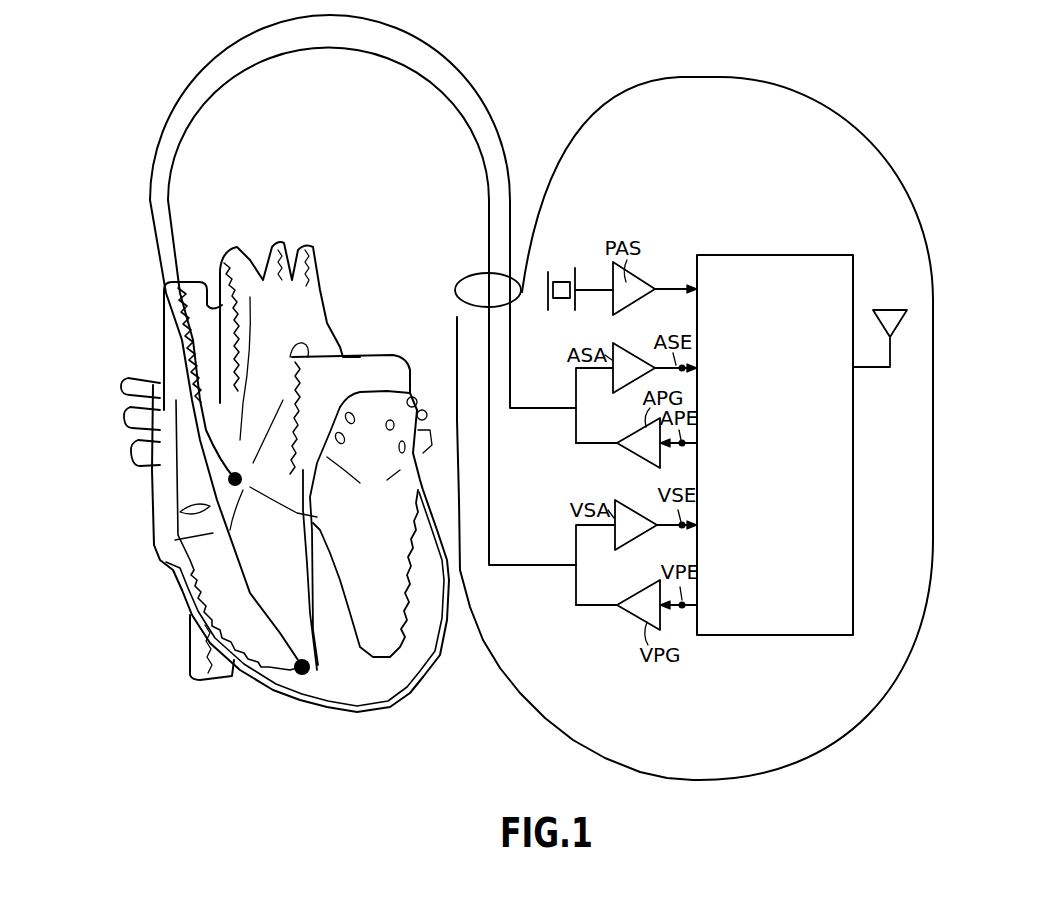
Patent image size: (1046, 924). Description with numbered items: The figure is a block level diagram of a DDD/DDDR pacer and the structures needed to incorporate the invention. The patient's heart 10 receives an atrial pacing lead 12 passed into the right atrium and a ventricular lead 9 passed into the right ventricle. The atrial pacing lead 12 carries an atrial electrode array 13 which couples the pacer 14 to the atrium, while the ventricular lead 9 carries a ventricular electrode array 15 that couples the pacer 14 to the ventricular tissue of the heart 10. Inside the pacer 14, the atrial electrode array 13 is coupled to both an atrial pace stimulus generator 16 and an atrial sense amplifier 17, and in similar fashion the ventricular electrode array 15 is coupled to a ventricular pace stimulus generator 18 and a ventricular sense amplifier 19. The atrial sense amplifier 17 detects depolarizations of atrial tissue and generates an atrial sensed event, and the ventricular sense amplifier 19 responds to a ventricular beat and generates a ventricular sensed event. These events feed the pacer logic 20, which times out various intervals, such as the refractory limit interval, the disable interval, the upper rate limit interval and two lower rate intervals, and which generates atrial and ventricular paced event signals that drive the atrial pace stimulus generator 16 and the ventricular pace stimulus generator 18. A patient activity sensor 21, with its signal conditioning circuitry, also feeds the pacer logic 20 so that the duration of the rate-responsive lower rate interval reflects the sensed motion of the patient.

The ventricular lead 9 is at (171, 242).
The patient's heart 10 is at (175, 614).
The atrial pacing lead 12 is at (153, 244).
The atrial electrode array 13 is at (262, 461).
The pacer 14 is at (602, 104).
The ventricular electrode array 15 is at (313, 677).
The atrial pace stimulus generator 16 is at (630, 458).
The atrial sense amplifier 17 is at (627, 390).
The ventricular pace stimulus generator 18 is at (632, 618).
The ventricular sense amplifier 19 is at (630, 545).
The pacer logic 20 is at (775, 445).
The patient activity sensor 21 is at (577, 277).